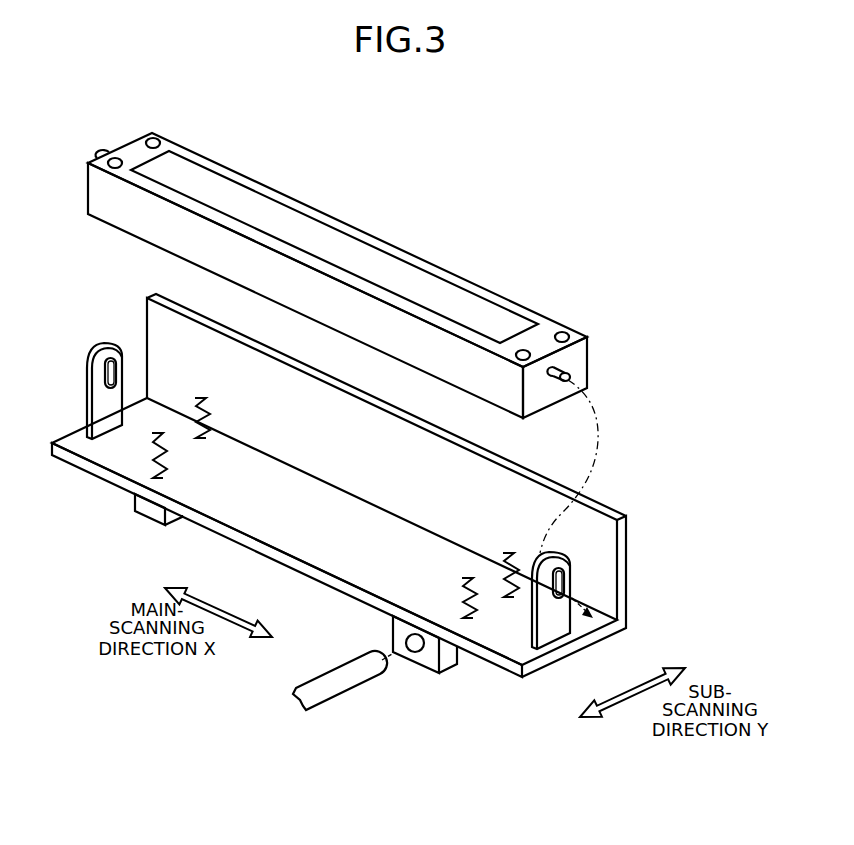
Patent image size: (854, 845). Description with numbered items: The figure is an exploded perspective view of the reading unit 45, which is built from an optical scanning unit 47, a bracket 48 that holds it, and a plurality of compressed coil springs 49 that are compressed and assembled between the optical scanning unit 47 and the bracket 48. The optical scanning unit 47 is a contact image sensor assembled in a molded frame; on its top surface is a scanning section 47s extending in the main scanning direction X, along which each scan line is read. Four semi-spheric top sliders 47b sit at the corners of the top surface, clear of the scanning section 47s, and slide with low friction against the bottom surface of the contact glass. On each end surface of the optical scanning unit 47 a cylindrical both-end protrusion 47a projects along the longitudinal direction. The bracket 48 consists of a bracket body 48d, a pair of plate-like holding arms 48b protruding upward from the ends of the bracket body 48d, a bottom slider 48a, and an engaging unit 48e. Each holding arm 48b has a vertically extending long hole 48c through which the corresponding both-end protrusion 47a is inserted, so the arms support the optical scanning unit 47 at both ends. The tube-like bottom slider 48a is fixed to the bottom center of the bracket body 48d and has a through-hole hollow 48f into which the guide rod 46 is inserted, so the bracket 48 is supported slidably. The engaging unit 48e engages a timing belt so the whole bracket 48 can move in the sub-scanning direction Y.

The reading unit 45 is at (472, 244).
The guide rod 46 is at (340, 682).
The optical scanning unit 47 is at (350, 253).
The both-end protrusions 47a is at (102, 152).
The top sliders 47b is at (115, 158).
The scanning section 47s is at (343, 257).
The bracket 48 is at (339, 485).
The bottom slider 48a is at (455, 667).
The holding arms 48b is at (354, 493).
The long hole 48c is at (113, 360).
The bracket body 48d is at (320, 556).
The engaging unit 48e is at (135, 499).
The hollow 48f is at (413, 650).
The compressed coil springs 49 is at (203, 446).